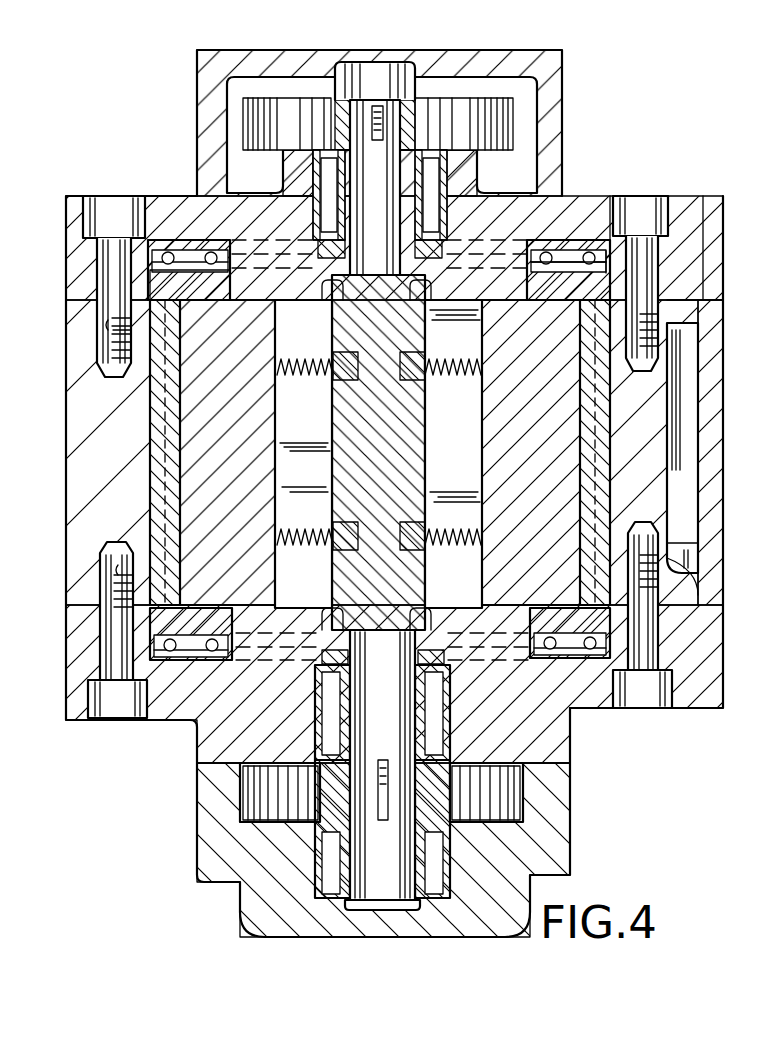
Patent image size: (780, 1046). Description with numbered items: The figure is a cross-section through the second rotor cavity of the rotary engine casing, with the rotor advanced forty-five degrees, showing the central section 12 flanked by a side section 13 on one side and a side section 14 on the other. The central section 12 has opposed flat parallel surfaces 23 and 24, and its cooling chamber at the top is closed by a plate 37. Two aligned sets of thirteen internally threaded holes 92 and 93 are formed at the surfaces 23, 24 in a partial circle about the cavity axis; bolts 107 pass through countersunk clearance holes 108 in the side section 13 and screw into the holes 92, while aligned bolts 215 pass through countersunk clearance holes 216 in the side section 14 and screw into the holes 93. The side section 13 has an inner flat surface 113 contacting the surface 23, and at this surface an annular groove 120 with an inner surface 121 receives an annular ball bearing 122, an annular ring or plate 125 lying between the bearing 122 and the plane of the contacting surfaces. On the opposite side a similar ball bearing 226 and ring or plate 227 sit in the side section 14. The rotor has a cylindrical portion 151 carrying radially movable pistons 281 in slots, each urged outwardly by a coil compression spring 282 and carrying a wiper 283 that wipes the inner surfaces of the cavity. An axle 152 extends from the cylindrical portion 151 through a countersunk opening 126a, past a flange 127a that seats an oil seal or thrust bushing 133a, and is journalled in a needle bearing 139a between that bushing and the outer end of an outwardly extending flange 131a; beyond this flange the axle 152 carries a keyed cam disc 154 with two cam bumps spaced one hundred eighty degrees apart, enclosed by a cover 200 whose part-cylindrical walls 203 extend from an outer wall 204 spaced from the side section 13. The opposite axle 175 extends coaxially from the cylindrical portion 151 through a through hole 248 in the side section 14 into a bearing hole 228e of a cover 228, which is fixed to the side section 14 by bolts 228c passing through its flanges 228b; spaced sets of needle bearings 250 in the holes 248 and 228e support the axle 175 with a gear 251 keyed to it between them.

The central section 12 is at (62, 483).
The side section 13 is at (614, 192).
The side section 14 is at (618, 712).
The flat parallel surface 23 is at (688, 294).
The flat parallel surface 24 is at (683, 616).
The plate 37 is at (712, 254).
The internally threaded holes 92 is at (106, 336).
The internally threaded holes 93 is at (105, 578).
The bolts 107 is at (112, 212).
The countersunk clearance holes 108 is at (104, 264).
The inner flat surface 113 is at (699, 324).
The annular groove 120 is at (564, 246).
The inner surface 121 is at (600, 250).
The annular ball bearing 122 is at (188, 250).
The annular ring or plate 125 is at (170, 284).
The countersunk opening 126a is at (320, 306).
The flange 127a is at (432, 306).
The outwardly extending flange 131a is at (468, 178).
The oil seal 133a is at (322, 250).
The needle bearing 139a is at (326, 165).
The cylindrical portion 151 is at (358, 443).
The axle 152 is at (372, 177).
The cam disc 154 is at (262, 113).
The axle 175 is at (383, 715).
The cover 200 is at (566, 96).
The part cylindrical walls 203 is at (200, 150).
The outer wall 204 is at (528, 70).
The bolts 215 is at (103, 705).
The countersunk clearance holes 216 is at (108, 642).
The ball bearing 226 is at (183, 667).
The annular ring or plate 227 is at (176, 625).
The cover 228 is at (198, 868).
The flanges 228b is at (210, 837).
The bolts 228c is at (250, 784).
The bearing hole 228e is at (330, 877).
The through hole 248 is at (320, 702).
The needle bearings 250 is at (432, 739).
The gear 251 is at (265, 805).
The pistons 281 is at (262, 434).
The coil compression springs 282 is at (450, 530).
The wipers 283 is at (158, 407).